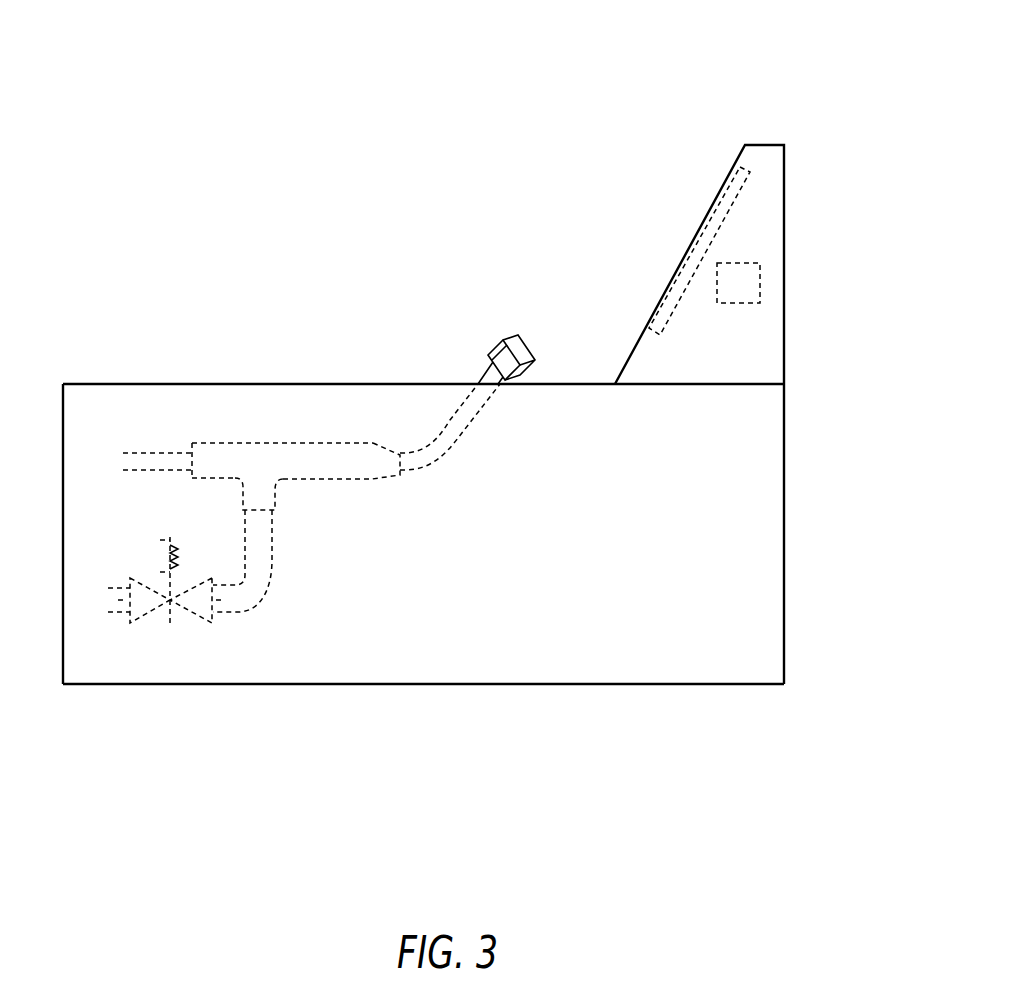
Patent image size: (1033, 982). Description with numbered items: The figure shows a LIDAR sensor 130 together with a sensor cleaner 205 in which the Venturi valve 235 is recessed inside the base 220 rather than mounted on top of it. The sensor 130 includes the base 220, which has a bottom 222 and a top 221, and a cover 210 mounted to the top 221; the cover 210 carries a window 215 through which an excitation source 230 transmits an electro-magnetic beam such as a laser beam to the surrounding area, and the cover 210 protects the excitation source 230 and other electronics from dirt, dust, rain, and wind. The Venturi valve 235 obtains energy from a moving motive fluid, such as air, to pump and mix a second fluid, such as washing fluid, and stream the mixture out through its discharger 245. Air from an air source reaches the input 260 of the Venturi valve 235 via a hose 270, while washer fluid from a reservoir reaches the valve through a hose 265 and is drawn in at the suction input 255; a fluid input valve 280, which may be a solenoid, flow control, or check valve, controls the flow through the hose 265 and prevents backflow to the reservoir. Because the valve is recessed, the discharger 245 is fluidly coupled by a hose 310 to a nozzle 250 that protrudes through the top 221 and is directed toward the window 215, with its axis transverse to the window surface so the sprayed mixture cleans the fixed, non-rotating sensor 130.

The LIDAR sensor 130 is at (738, 72).
The sensor cleaner 205 is at (352, 187).
The cover 210 is at (784, 230).
The window 215 is at (686, 253).
The base 220 is at (784, 626).
The top 221 is at (195, 384).
The bottom 222 is at (641, 684).
The excitation source 230 is at (737, 303).
The Venturi valve 235 is at (290, 418).
The discharger 245 is at (400, 445).
The nozzle 250 is at (511, 337).
The suction input 255 is at (243, 497).
The input 260 is at (188, 450).
The hose 265 is at (273, 562).
The hose 270 is at (133, 450).
The fluid input valve 280 is at (198, 617).
The hose 310 is at (450, 450).